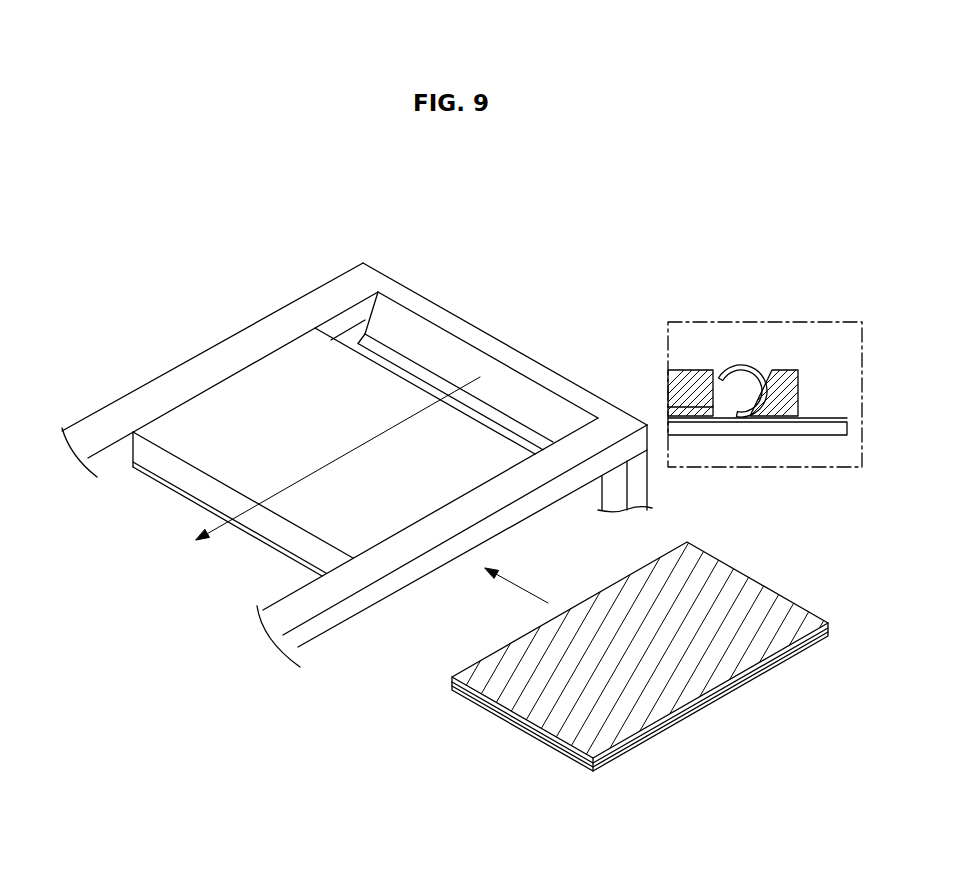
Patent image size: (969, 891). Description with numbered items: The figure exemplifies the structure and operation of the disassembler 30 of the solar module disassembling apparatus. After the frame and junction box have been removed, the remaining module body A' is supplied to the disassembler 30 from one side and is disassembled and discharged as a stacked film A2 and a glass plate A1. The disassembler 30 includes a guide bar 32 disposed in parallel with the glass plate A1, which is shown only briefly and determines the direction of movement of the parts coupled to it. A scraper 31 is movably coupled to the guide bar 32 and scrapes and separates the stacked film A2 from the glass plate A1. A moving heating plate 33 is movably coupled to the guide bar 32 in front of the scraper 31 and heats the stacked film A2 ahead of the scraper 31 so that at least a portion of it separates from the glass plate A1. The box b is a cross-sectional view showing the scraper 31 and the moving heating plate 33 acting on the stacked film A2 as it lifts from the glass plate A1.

The disassembler 30 is at (449, 403).
The scraper 31 is at (415, 340).
The guide bar 32 is at (260, 330).
The moving heating plate 33 is at (210, 420).
The glass plate A1 is at (753, 430).
The stacked film A2 is at (743, 365).
The module body A' is at (630, 529).
The box b is at (727, 320).